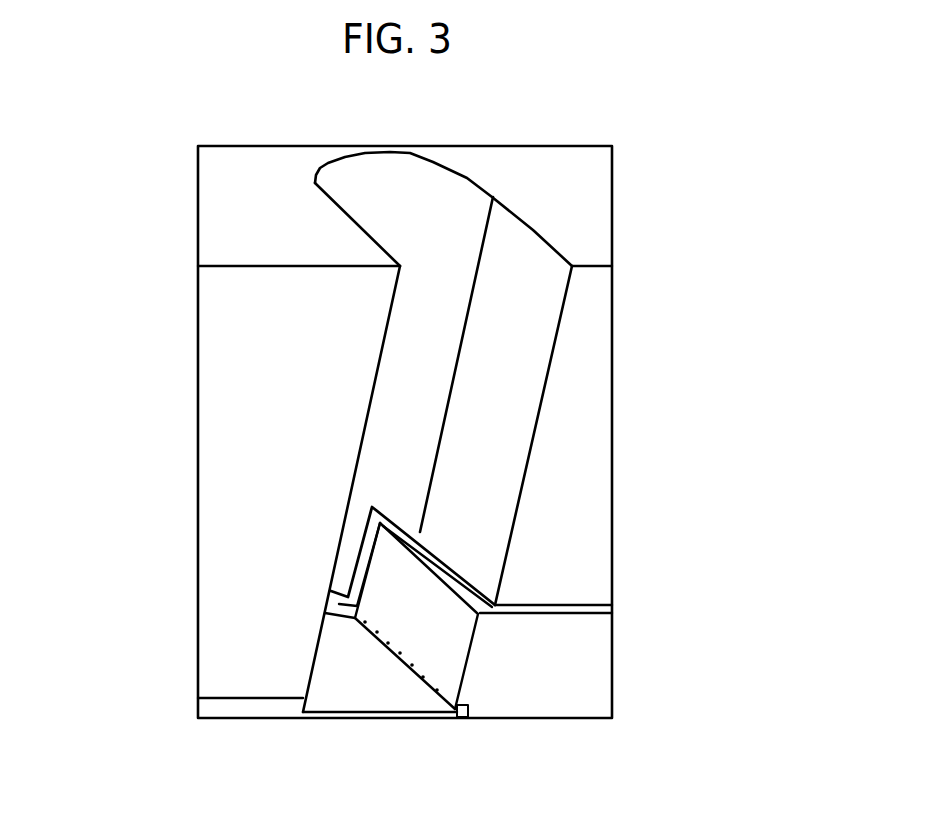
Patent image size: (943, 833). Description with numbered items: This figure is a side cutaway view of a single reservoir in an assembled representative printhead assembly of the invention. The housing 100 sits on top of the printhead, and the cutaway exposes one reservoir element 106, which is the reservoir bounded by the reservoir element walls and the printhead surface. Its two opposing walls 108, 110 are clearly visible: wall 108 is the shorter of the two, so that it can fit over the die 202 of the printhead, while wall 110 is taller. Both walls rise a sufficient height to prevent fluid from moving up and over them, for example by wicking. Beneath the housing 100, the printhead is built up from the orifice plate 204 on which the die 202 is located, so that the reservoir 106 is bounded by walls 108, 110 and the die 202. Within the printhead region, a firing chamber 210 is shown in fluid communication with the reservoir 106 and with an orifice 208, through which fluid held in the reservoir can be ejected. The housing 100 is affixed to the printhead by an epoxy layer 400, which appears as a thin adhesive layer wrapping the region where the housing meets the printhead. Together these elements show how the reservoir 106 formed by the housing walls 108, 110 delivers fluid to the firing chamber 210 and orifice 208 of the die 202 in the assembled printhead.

The housing 100 is at (507, 432).
The reservoir element 106 is at (318, 432).
The wall 108 is at (655, 435).
The wall 110 is at (582, 364).
The die 202 is at (294, 504).
The orifice plate 204 is at (210, 658).
The orifice 208 is at (257, 564).
The firing chamber 210 is at (551, 661).
The epoxy layer 400 is at (266, 423).